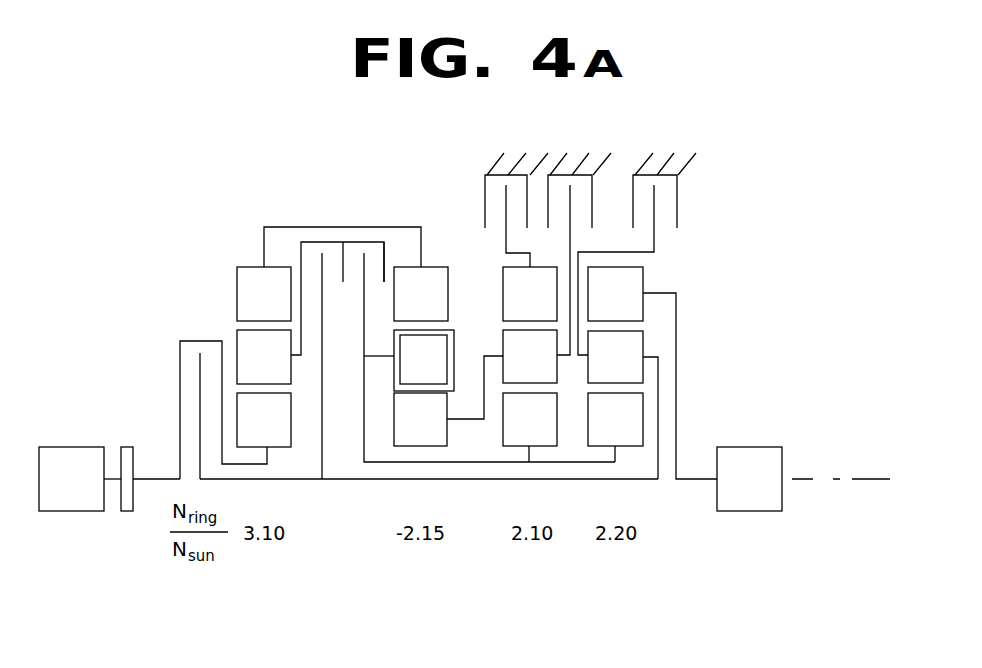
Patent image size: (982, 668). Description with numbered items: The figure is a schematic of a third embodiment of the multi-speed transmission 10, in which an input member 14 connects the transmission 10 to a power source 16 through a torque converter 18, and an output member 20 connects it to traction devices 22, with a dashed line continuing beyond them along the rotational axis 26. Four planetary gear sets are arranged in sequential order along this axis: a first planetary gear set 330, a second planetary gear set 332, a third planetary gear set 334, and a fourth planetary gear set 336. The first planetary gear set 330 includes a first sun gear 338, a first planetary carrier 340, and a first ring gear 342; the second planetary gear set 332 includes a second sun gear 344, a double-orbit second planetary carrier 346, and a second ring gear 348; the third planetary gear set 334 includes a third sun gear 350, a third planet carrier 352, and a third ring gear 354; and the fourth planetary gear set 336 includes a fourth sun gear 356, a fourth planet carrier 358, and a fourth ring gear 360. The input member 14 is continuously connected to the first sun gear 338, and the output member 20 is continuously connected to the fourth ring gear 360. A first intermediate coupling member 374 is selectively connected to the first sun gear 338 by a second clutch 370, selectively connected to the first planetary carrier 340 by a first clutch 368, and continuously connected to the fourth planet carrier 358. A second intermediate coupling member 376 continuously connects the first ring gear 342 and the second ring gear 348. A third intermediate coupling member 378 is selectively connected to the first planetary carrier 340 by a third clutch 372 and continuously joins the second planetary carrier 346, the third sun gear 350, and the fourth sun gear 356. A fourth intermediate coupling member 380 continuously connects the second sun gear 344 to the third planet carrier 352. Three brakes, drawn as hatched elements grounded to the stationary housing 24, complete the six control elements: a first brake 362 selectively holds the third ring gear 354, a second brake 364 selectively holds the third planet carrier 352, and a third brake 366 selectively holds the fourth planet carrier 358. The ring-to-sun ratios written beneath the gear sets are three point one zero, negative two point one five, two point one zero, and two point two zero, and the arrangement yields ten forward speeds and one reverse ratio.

The multi-speed transmission 10 is at (222, 178).
The input member 14 is at (167, 478).
The power source 16 is at (60, 492).
The torque converter 18 is at (122, 447).
The output member 20 is at (693, 478).
The traction devices 22 is at (738, 492).
The stationary housing 24 is at (498, 165).
The rotational axis 26 is at (815, 479).
The first planetary gear set 330 is at (240, 261).
The second planetary gear set 332 is at (433, 257).
The third planetary gear set 334 is at (490, 283).
The fourth planetary gear set 336 is at (657, 270).
The first sun gear 338 is at (246, 433).
The first planetary carrier 340 is at (246, 370).
The first ring gear 342 is at (246, 307).
The second sun gear 344 is at (402, 432).
The second planetary carrier 346 is at (405, 372).
The second ring gear 348 is at (403, 307).
The third sun gear 350 is at (512, 432).
The third planet carrier 352 is at (512, 369).
The third ring gear 354 is at (512, 307).
The fourth sun gear 356 is at (597, 432).
The fourth planet carrier 358 is at (597, 369).
The fourth ring gear 360 is at (597, 307).
The first brake 362 is at (480, 183).
The second brake 364 is at (592, 190).
The third brake 366 is at (677, 195).
The first clutch 368 is at (305, 227).
The second clutch 370 is at (193, 341).
The third clutch 372 is at (360, 242).
The first intermediate coupling member 374 is at (313, 480).
The second intermediate coupling member 376 is at (385, 227).
The third intermediate coupling member 378 is at (362, 458).
The fourth intermediate coupling member 380 is at (457, 422).